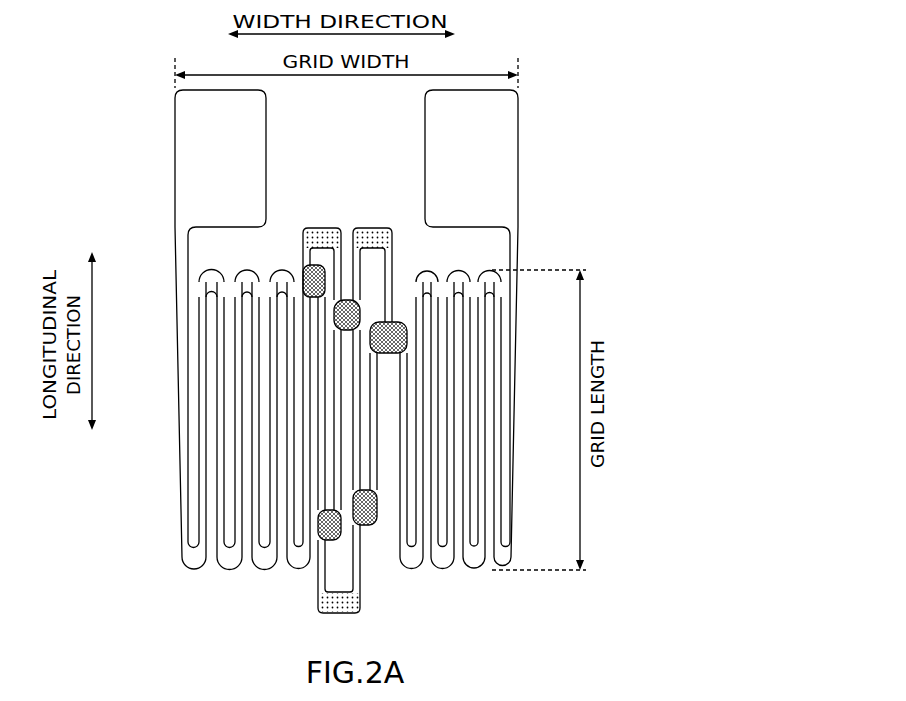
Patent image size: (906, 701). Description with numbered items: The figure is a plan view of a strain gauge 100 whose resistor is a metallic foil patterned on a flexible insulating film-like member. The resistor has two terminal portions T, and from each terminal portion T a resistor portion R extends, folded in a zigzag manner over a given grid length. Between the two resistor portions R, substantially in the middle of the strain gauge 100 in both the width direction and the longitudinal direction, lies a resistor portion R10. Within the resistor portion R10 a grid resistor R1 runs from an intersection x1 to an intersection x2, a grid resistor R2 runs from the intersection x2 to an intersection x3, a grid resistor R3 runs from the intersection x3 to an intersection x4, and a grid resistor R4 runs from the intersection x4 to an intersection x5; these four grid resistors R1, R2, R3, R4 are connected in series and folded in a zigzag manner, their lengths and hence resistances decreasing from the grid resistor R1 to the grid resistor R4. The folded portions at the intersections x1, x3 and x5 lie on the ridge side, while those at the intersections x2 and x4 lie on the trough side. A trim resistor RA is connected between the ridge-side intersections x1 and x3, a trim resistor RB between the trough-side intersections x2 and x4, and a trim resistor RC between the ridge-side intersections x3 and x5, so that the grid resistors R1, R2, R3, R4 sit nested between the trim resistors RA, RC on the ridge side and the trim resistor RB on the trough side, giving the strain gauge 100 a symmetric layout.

The strain gauge 100 is at (97, 187).
The terminal portion T is at (204, 152).
The resistor portion R is at (305, 578).
The resistor portion R10 is at (361, 377).
The trim resistor RA is at (326, 240).
The trim resistor RB is at (356, 614).
The trim resistor RC is at (370, 240).
The grid resistor R1 is at (324, 357).
The grid resistor R2 is at (351, 378).
The grid resistor R3 is at (364, 425).
The grid resistor R4 is at (379, 456).
The intersection x1 is at (298, 272).
The intersection x2 is at (320, 546).
The intersection x3 is at (362, 301).
The intersection x4 is at (368, 528).
The intersection x5 is at (399, 334).